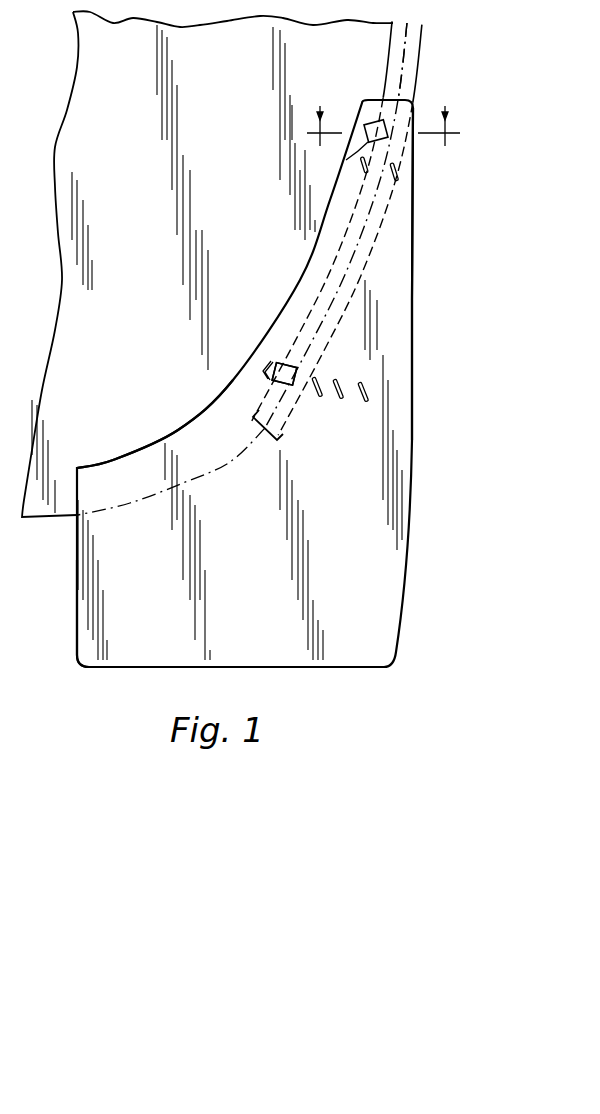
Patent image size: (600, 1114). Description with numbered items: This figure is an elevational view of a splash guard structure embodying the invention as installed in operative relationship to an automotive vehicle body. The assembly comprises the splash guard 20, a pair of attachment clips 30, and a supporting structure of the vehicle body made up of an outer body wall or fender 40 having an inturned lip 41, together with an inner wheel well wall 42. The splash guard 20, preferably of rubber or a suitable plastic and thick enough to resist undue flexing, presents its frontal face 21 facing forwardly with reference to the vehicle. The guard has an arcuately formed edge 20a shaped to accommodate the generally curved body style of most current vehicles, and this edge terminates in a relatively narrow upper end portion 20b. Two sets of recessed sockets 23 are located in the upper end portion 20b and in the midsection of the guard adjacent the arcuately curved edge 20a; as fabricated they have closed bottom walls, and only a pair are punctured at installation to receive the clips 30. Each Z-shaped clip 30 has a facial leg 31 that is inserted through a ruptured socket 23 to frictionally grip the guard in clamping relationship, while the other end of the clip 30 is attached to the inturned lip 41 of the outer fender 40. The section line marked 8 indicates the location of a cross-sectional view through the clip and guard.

The section line 8- 8 is at (382, 126).
The splash guard 20 is at (414, 440).
The arcuately formed edge 20a is at (180, 430).
The upper end portion 20b is at (408, 163).
The frontal face 21 is at (245, 575).
The recessed sockets 23 is at (363, 164).
The attachment clip 30 is at (373, 115).
The facial leg 31 is at (287, 362).
The outer fender 40 is at (423, 48).
The inturned lip 41 is at (398, 45).
The inner wheel well wall 42 is at (250, 216).